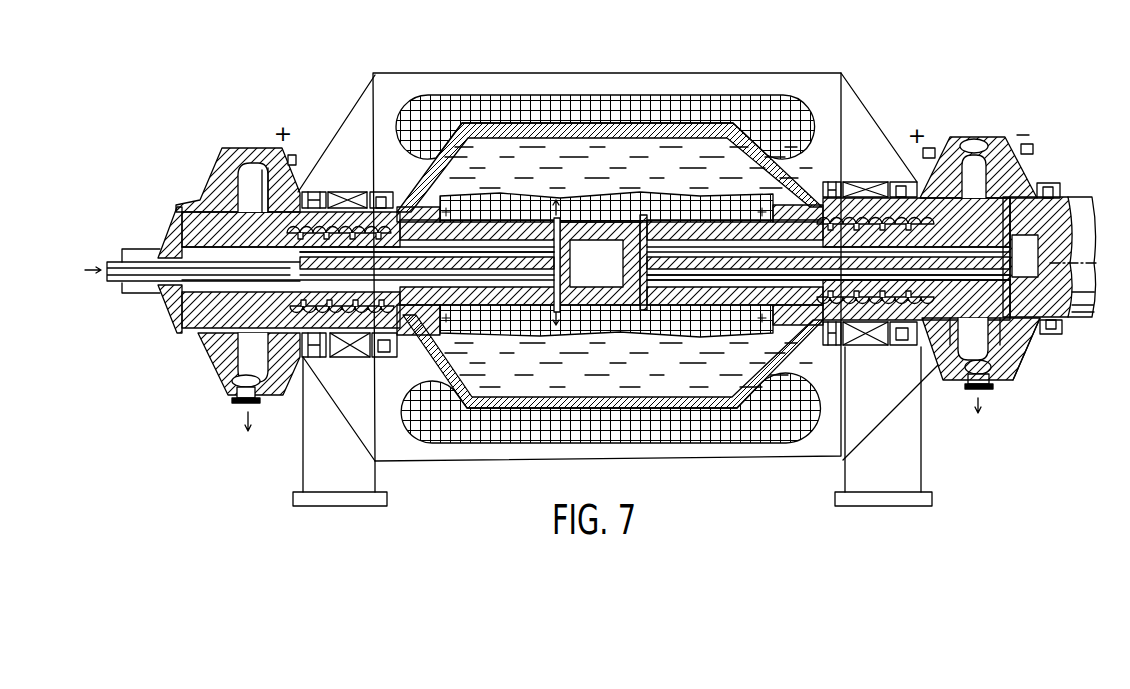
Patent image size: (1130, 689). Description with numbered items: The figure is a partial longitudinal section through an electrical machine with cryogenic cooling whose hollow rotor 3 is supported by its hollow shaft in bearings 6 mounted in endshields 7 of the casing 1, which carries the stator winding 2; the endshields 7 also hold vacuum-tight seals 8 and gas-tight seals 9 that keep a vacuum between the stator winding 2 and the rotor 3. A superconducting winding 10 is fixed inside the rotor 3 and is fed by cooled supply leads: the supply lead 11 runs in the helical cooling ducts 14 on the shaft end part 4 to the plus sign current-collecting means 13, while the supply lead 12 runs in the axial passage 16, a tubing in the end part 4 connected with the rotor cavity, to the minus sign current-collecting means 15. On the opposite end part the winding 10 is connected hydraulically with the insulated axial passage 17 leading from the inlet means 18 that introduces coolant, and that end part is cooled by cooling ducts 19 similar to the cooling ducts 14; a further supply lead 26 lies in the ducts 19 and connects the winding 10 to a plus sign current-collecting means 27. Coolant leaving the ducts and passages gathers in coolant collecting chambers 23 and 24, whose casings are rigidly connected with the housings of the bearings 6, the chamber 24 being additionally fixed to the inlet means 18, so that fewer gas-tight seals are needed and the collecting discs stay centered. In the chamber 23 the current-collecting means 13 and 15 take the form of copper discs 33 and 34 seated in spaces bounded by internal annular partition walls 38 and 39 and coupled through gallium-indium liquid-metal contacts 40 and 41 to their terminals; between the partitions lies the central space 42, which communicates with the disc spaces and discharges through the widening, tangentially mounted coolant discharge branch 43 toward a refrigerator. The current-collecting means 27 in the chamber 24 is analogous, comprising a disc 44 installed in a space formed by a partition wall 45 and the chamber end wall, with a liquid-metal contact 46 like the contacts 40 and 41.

The casing 1 is at (418, 73).
The stator winding 2 is at (530, 100).
The hollow rotor 3 is at (622, 128).
The end part of the hollow shaft 4 is at (1073, 220).
The bearings 6 is at (360, 350).
The endshields 7 is at (850, 103).
The vacuum-tight seals 8 is at (382, 192).
The gas-tight seals 9 is at (347, 193).
The superconducting winding 10 is at (600, 327).
The supply lead 11 is at (887, 307).
The supply lead 12 is at (748, 280).
The plus sign current-collecting means 13 is at (929, 148).
The cooling ducts 14 is at (853, 222).
The minus sign current-collecting means 15 is at (1033, 149).
The axial passage 16 is at (702, 282).
The axial passage 17 is at (498, 280).
The inlet means 18 is at (168, 307).
The cooling ducts 19 is at (353, 313).
The coolant collecting chamber 23 is at (1013, 380).
The coolant collecting chamber 24 is at (208, 187).
The supply lead 26 is at (327, 322).
The plus sign current-collecting means 27 is at (300, 183).
The disc 33 is at (965, 140).
The disc 34 is at (1040, 185).
The partition wall 38 is at (958, 374).
The partition wall 39 is at (1028, 350).
The contact 40 is at (933, 373).
The contact 41 is at (1040, 347).
The central space 42 is at (975, 148).
The coolant discharge branch 43 is at (240, 406).
The disc 44 is at (265, 158).
The partition wall 45 is at (255, 170).
The liquid-metal contact 46 is at (291, 155).